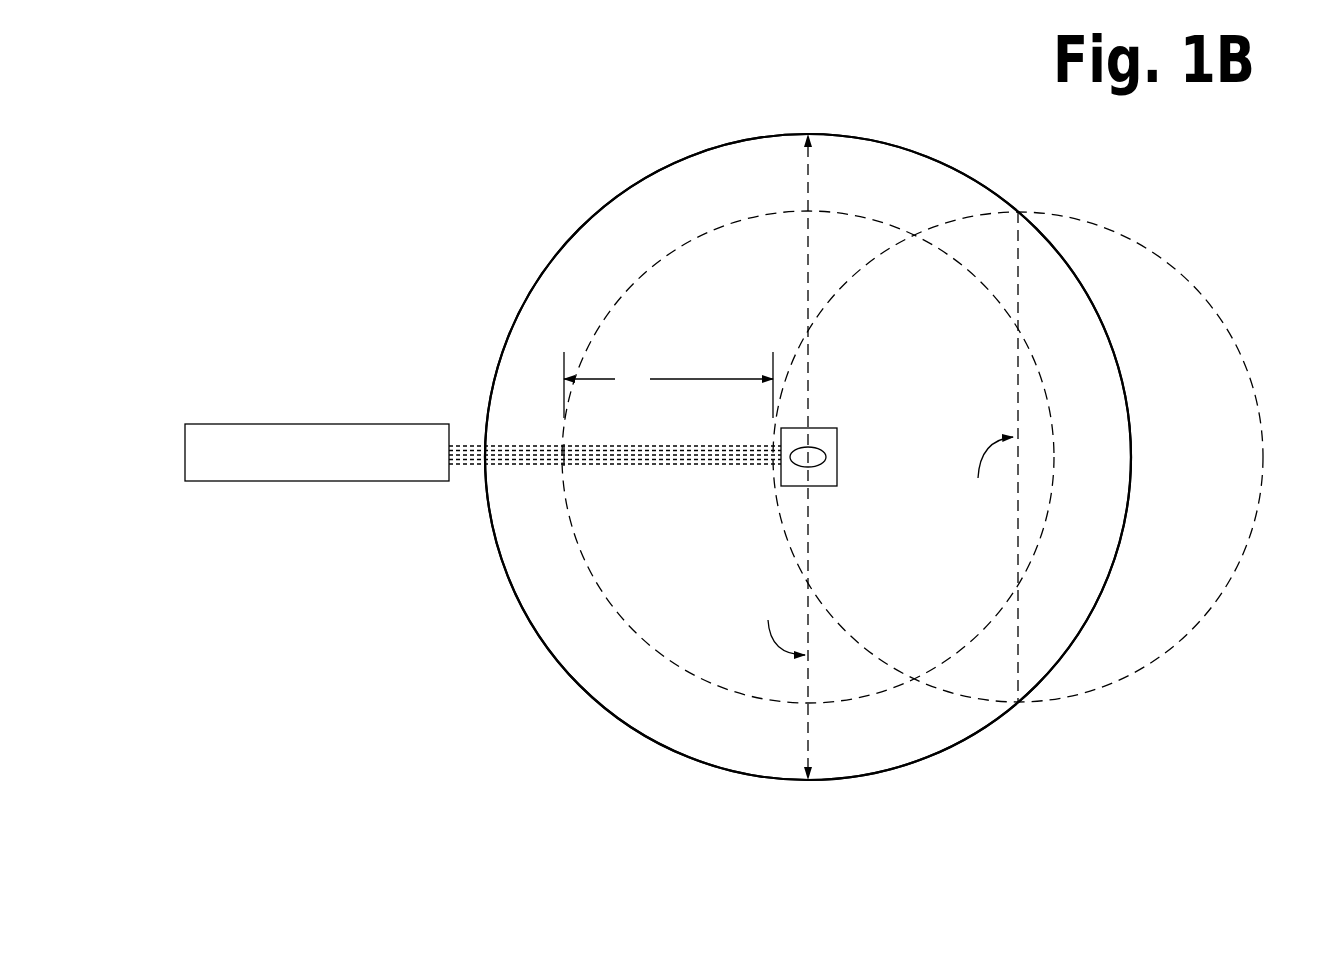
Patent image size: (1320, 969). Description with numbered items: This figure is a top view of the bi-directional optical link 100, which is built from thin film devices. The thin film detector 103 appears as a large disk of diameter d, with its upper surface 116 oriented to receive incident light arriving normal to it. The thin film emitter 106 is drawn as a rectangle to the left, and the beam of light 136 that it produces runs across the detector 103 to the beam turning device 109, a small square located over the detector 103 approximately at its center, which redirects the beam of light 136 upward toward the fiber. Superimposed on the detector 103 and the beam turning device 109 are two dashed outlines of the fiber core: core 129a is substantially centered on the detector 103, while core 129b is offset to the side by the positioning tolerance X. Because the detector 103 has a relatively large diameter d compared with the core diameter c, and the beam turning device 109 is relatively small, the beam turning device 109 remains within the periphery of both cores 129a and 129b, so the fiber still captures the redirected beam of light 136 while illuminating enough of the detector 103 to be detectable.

The bi-directional optical link 100 is at (297, 215).
The thin film detector 103 is at (820, 783).
The thin film emitter 106 is at (392, 482).
The beam turning device 109 is at (838, 457).
The upper surface 116 is at (633, 705).
The core outline in first position 129a is at (645, 280).
The core outline in second position 129b is at (1172, 270).
The beam of light 136 is at (650, 445).